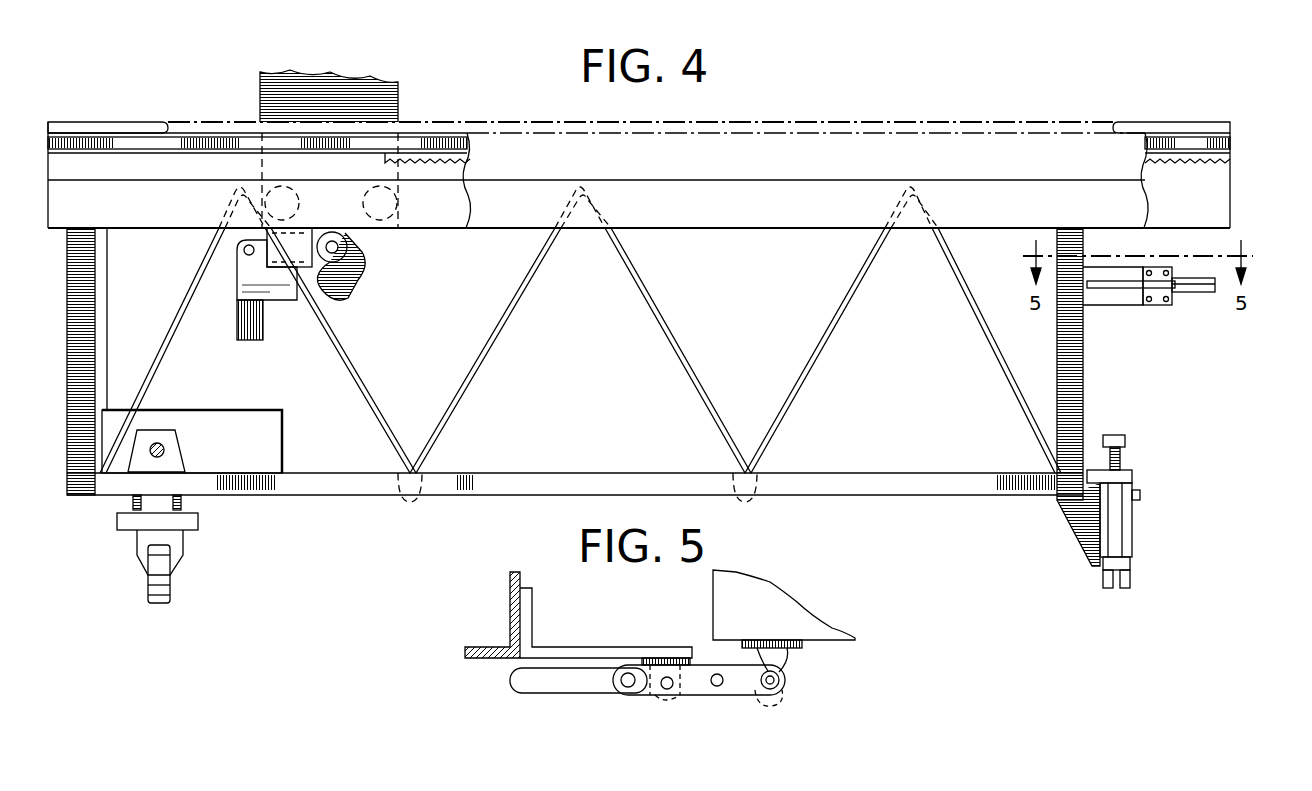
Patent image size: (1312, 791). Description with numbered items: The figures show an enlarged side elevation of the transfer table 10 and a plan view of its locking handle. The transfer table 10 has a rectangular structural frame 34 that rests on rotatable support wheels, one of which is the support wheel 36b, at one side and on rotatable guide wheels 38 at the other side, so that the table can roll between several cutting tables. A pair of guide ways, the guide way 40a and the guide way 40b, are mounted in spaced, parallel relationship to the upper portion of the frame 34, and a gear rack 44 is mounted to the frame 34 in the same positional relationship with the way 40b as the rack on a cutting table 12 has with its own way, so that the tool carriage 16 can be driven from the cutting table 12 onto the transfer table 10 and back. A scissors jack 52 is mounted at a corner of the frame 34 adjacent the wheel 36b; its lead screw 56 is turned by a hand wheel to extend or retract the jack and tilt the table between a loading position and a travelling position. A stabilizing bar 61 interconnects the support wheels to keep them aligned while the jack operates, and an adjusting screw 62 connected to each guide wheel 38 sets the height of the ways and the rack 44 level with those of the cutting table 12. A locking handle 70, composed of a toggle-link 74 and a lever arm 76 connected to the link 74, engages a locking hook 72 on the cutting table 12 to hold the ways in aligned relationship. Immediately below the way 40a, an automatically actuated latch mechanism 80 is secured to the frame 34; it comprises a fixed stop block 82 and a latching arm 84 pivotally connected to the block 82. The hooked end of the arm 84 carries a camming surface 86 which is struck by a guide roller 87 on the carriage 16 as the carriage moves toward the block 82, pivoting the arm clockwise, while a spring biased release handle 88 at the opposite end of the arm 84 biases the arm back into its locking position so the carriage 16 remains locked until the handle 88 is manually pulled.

In FIG. 4, the transfer table 10 is at (943, 94).
In FIG. 5, the cutting table 12 is at (757, 606).
In FIG. 4, the tool carriage 16 is at (398, 86).
In FIG. 5, the structural frame 34 is at (510, 582).
In FIG. 4, the support wheel 36b is at (172, 593).
In FIG. 4, the guide wheel 38 is at (1130, 580).
In FIG. 4, the guide way 40a is at (425, 230).
In FIG. 4, the guide way 40b is at (1155, 122).
In FIG. 4, the gear rack 44 is at (467, 158).
In FIG. 4, the scissors jack 52 is at (192, 426).
In FIG. 4, the lead screw 56 is at (165, 450).
In FIG. 4, the stabilizing bar 61 is at (198, 522).
In FIG. 4, the adjusting screw 62 is at (1128, 440).
In FIG. 4, the locking handle 70 is at (1161, 312).
In FIG. 5, the locking handle 70 is at (658, 714).
In FIG. 5, the locking hook 72 is at (778, 696).
In FIG. 4, the toggle-link 74 is at (1203, 292).
In FIG. 5, the toggle-link 74 is at (717, 695).
In FIG. 4, the lever arm 76 is at (1118, 288).
In FIG. 5, the lever arm 76 is at (533, 685).
In FIG. 4, the latch mechanism 80 is at (306, 284).
In FIG. 4, the stop block 82 is at (308, 232).
In FIG. 4, the latching arm 84 is at (284, 300).
In FIG. 4, the camming surface 86 is at (350, 246).
In FIG. 4, the guide roller 87 is at (335, 282).
In FIG. 4, the release handle 88 is at (250, 340).